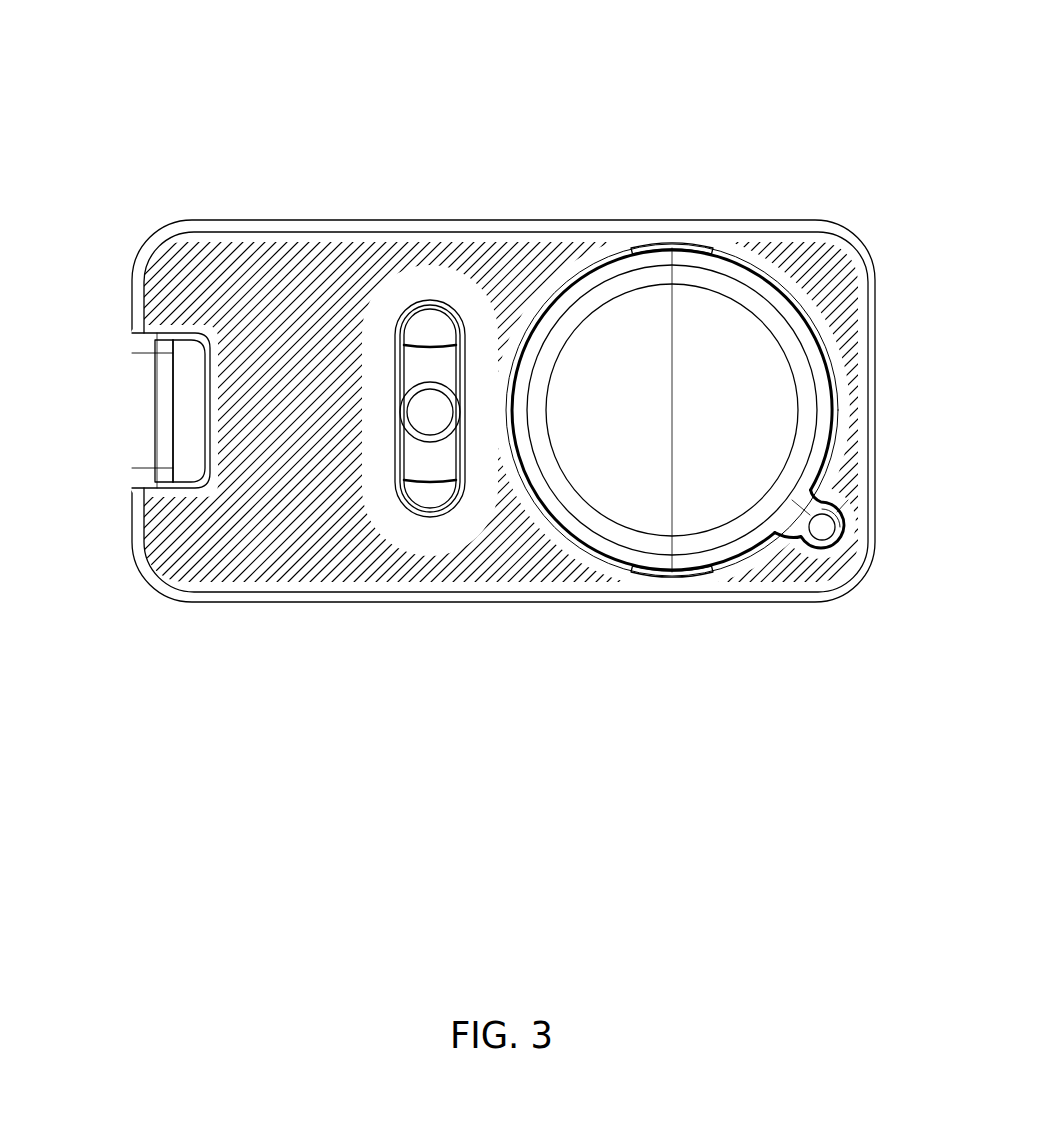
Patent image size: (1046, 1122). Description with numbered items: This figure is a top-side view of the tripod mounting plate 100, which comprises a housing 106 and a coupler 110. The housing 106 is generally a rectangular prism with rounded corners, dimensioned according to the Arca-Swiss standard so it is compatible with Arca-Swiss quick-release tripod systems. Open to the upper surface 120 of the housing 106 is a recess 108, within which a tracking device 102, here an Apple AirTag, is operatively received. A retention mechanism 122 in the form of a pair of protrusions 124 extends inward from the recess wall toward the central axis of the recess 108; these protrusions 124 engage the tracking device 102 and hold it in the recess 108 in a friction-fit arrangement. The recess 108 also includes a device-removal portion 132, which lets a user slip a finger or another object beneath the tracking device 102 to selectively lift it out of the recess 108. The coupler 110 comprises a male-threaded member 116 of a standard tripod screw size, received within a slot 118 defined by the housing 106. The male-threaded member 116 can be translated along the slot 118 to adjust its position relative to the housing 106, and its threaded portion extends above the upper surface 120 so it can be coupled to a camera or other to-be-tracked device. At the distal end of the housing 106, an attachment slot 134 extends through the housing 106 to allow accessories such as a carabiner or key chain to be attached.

The tripod mounting plate 100 is at (402, 74).
The tracking device 102 is at (689, 515).
The housing 106 is at (255, 266).
The recess 108 is at (752, 267).
The coupler 110 is at (434, 402).
The male-threaded member 116 is at (409, 396).
The slot 118 is at (430, 500).
The upper surface 120 is at (316, 258).
The retention mechanism 122 is at (655, 249).
The protrusions 124 is at (690, 253).
The device-removal portion 132 is at (818, 518).
The attachment slot 134 is at (180, 422).